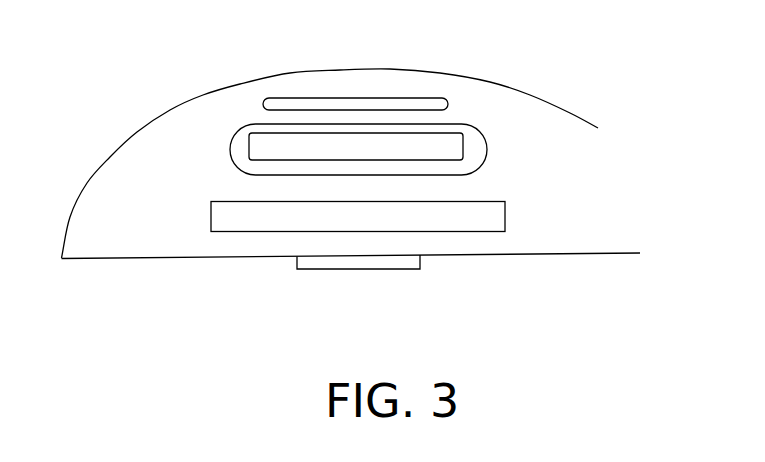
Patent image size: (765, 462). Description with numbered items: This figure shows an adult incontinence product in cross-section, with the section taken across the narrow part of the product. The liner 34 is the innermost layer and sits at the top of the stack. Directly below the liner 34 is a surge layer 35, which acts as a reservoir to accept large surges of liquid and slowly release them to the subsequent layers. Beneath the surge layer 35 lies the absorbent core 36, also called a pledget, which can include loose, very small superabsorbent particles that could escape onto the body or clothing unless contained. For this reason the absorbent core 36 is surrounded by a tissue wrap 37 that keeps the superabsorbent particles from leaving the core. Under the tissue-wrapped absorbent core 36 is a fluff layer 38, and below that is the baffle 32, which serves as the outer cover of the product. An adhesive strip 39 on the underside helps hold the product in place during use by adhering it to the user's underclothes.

The baffle 32 is at (569, 254).
The liner 34 is at (533, 95).
The surge layer 35 is at (307, 98).
The absorbent core 36 is at (447, 147).
The tissue wrap 37 is at (230, 146).
The fluff layer 38 is at (487, 218).
The adhesive strip 39 is at (343, 270).